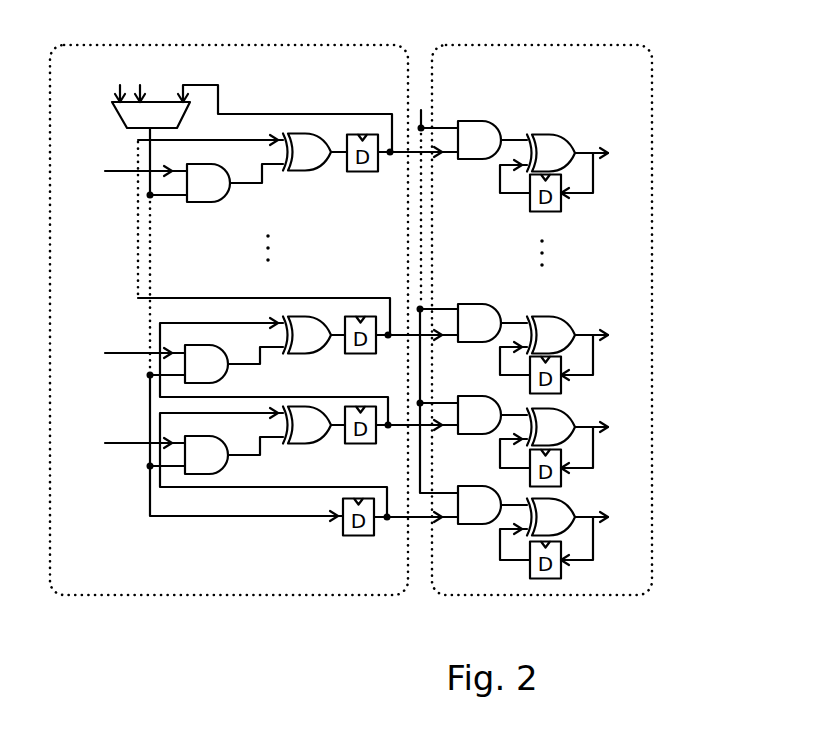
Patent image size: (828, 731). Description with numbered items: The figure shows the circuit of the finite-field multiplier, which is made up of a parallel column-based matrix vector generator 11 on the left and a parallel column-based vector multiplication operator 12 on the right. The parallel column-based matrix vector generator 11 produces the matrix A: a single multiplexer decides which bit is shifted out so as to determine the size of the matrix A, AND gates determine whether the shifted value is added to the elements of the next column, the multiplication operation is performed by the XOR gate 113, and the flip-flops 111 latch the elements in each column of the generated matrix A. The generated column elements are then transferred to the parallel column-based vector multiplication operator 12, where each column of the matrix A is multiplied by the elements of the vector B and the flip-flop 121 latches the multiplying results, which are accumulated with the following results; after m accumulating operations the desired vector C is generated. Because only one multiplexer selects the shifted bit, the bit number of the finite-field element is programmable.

The parallel column-based matrix vector generator 11 is at (187, 595).
The parallel column-based vector multiplication operator 12 is at (630, 595).
The flip-flop 111 is at (352, 536).
The XOR gate 113 is at (308, 171).
The flip-flop 121 is at (555, 212).